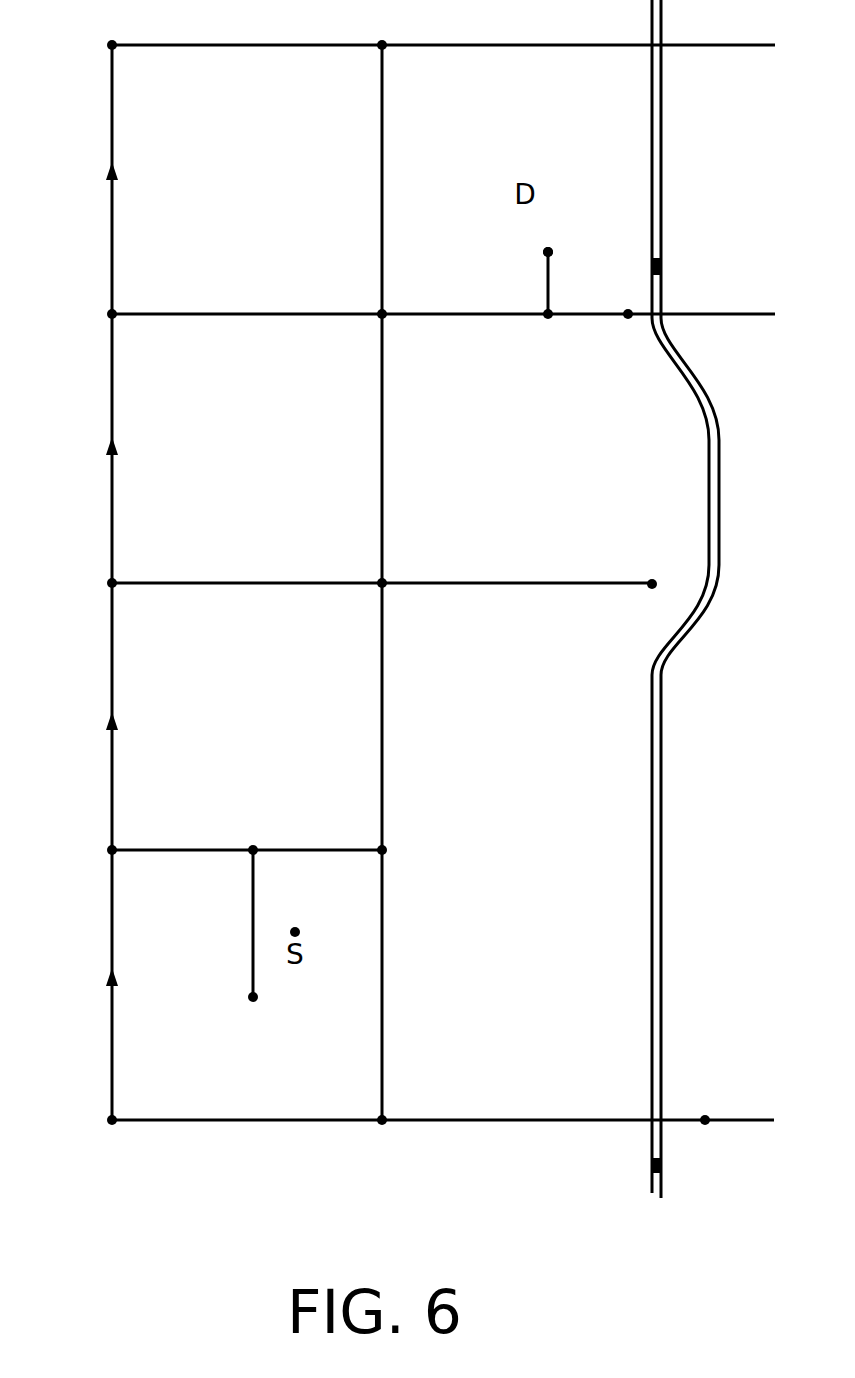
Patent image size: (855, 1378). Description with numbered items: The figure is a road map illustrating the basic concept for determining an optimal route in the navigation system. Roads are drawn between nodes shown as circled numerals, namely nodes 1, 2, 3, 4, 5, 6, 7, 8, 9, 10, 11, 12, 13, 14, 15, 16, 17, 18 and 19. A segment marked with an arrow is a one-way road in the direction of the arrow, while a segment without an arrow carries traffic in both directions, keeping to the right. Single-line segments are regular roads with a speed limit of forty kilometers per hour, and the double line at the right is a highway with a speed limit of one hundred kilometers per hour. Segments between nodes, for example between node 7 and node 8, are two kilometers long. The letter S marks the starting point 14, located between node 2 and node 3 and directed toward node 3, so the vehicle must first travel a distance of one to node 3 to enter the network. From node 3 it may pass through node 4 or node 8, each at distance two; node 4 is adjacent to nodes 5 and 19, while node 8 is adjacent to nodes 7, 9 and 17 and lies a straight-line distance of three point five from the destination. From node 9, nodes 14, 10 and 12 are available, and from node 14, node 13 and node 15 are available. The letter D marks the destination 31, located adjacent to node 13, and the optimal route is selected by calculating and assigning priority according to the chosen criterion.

The node 1 is at (230, 1017).
The node 2 is at (255, 897).
The node 3 is at (408, 850).
The node 4 is at (350, 1096).
The node 5 is at (81, 1098).
The node 6 is at (80, 827).
The node 7 is at (135, 606).
The node 8 is at (357, 560).
The node 9 is at (347, 292).
The node 10 is at (135, 339).
The node 11 is at (87, 45).
The node 12 is at (358, 67).
The node 13 is at (571, 252).
The node 14 is at (296, 931).
The node 15 is at (623, 339).
The node 16 is at (684, 268).
The node 17 is at (645, 559).
The node 18 is at (724, 1096).
The node 19 is at (683, 1165).
The destination 31 is at (547, 252).